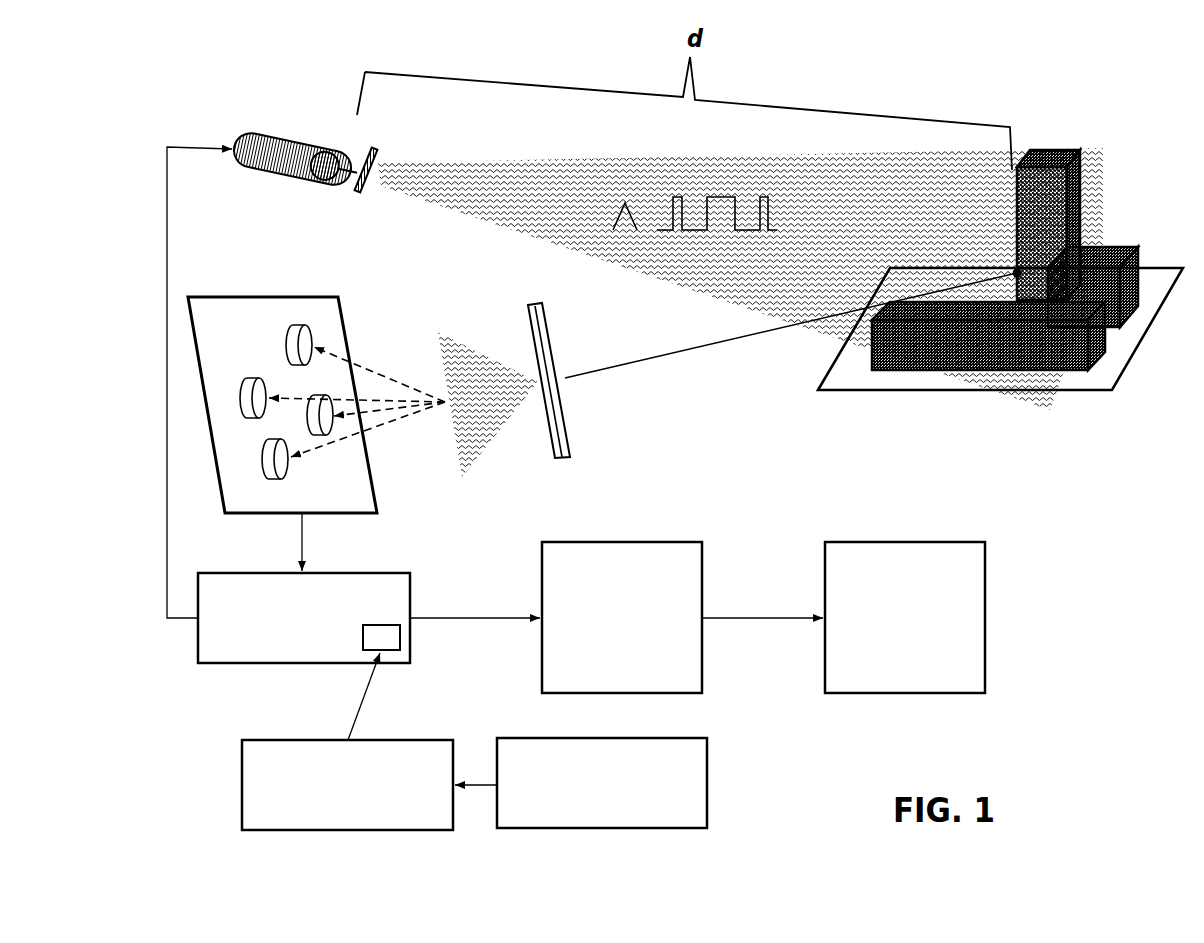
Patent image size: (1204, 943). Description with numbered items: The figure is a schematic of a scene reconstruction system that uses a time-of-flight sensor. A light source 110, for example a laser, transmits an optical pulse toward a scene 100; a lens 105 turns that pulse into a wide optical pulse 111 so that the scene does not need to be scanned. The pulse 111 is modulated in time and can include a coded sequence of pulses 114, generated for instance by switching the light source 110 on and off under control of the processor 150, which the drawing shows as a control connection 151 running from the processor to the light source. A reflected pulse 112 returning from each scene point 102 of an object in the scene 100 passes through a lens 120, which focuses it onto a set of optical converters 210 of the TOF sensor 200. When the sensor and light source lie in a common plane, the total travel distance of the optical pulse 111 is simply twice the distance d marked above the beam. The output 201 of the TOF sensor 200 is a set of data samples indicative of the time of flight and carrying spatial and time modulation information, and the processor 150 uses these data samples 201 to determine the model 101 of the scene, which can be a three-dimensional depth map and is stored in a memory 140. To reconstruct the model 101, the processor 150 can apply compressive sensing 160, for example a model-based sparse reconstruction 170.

The scene 100 is at (1042, 149).
The model 101 is at (623, 542).
The scene point 102 is at (1017, 273).
The lens 105 is at (357, 189).
The light source 110 is at (300, 143).
The optical pulse 111 is at (462, 168).
The reflected pulse 112 is at (682, 351).
The coded sequence of pulses 114 is at (695, 197).
The lens 120 is at (530, 304).
The memory 140 is at (908, 542).
The processor 150 is at (250, 663).
The control signal 151 is at (167, 248).
The compressive sensing 160 is at (417, 738).
The model-based sparse reconstruction 170 is at (693, 712).
The TOF sensor 200 is at (288, 297).
The output 201 is at (303, 538).
The optical converters 210 is at (288, 328).